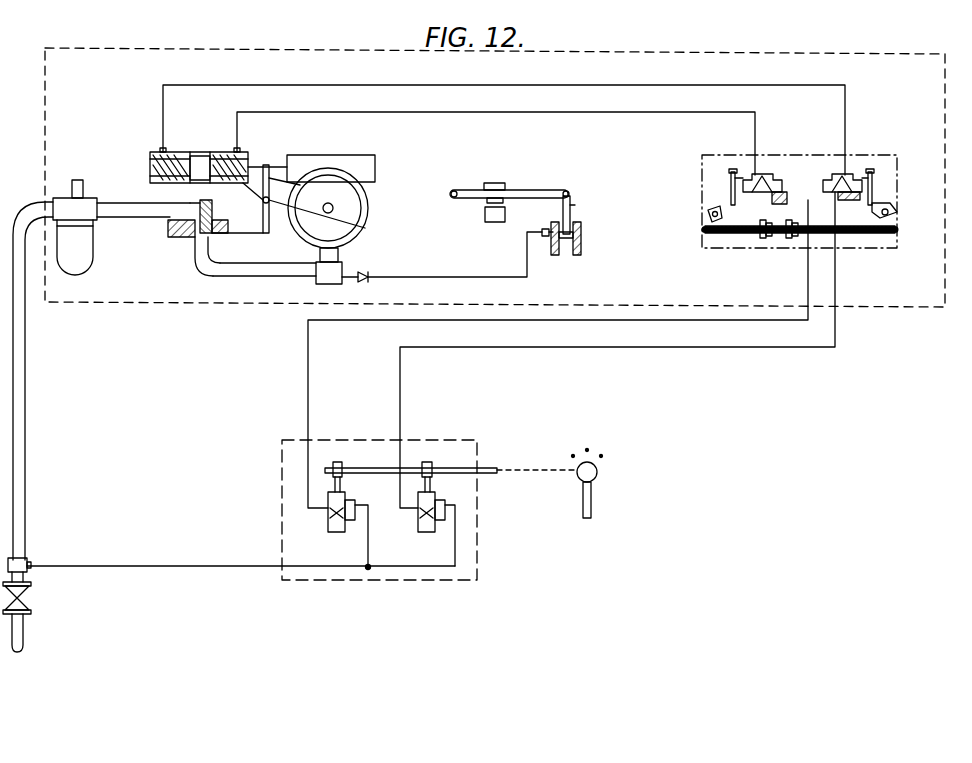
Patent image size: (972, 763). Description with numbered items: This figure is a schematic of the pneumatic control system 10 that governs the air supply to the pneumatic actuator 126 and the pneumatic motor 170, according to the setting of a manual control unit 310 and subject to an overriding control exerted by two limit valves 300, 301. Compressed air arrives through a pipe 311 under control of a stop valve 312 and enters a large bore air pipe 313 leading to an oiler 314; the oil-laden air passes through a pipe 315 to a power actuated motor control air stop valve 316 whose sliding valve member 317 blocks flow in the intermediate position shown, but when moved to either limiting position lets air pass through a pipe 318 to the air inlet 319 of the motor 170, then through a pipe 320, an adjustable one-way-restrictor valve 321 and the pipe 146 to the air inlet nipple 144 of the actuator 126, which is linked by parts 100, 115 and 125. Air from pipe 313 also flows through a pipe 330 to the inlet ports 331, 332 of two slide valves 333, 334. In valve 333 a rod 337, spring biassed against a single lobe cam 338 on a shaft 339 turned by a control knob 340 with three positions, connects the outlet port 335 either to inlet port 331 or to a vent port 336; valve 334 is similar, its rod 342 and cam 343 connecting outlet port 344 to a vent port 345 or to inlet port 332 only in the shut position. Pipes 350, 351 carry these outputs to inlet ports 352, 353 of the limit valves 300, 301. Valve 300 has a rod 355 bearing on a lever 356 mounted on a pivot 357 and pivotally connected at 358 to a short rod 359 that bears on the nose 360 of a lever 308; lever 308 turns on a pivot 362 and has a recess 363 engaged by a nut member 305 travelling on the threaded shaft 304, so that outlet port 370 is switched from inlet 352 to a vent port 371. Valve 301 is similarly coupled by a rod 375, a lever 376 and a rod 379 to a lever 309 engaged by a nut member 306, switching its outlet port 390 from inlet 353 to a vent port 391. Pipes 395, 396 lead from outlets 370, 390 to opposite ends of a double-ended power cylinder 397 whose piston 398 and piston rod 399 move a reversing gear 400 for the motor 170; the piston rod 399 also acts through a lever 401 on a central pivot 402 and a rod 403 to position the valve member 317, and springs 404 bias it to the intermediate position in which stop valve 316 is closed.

The apparatus 10 is at (875, 55).
The rod 100 is at (455, 190).
The link 115 is at (550, 194).
The arm 125 is at (572, 212).
The pneumatic actuator 126 is at (581, 236).
The air inlet nipple 144 is at (542, 233).
The pipe 146 is at (440, 279).
The pneumatic motor 170 is at (368, 208).
The limit valve 300 is at (777, 190).
The limit valve 301 is at (825, 180).
The vertical shaft 304 is at (822, 198).
The nut member 305 is at (765, 234).
The nut member 306 is at (793, 236).
The lever 308 is at (708, 215).
The lever 309 is at (893, 213).
The manual control unit 310 is at (432, 432).
The pipe 311 is at (20, 637).
The stop valve 312 is at (31, 612).
The large bore air pipe 313 is at (22, 432).
The oiler 314 is at (75, 260).
The pipe 315 is at (125, 203).
The motor control air stop valve 316 is at (180, 240).
The sliding valve member 317 is at (212, 252).
The pipe 318 is at (255, 278).
The air inlet 319 is at (320, 278).
The pipe 320 is at (368, 275).
The adjustable one-way-restrictor valve 321 is at (363, 293).
The pipe 330 is at (143, 567).
The inlet port 331 is at (340, 500).
The inlet port 332 is at (440, 500).
The slide valve 333 is at (333, 533).
The slide valve 334 is at (430, 533).
The outlet port 335 is at (330, 510).
The vent port 336 is at (345, 520).
The rod 337 is at (333, 483).
The single lobe cam 338 is at (342, 465).
The shaft 339 is at (483, 468).
The control knob 340 is at (592, 472).
The rod 342 is at (430, 485).
The single lobe cam 343 is at (432, 465).
The outlet port 344 is at (418, 512).
The vent port 345 is at (440, 518).
The pipe 350 is at (308, 385).
The pipe 351 is at (400, 408).
The inlet port 352 is at (788, 204).
The inlet port 353 is at (870, 233).
The rod 355 is at (738, 185).
The lever 356 is at (735, 195).
The pivot 357 is at (743, 178).
The pivotal connection 358 is at (730, 205).
The short rod 359 is at (728, 206).
The nose 360 is at (712, 212).
The pivot 362 is at (712, 220).
The recess 363 is at (716, 226).
The outlet port 370 is at (765, 175).
The vent port 371 is at (772, 193).
The rod 375 is at (870, 172).
The lever 376 is at (876, 176).
The rod 379 is at (890, 204).
The outlet port 390 is at (847, 177).
The vent port 391 is at (854, 204).
The pipe 395 is at (583, 112).
The pipe 396 is at (583, 85).
The double-ended power cylinder 397 is at (175, 150).
The piston 398 is at (203, 158).
The piston rod 399 is at (252, 168).
The reversing gear 400 is at (340, 160).
The lever 401 is at (300, 185).
The central pivot 402 is at (365, 228).
The rod 403 is at (266, 233).
The springs 404 is at (187, 183).